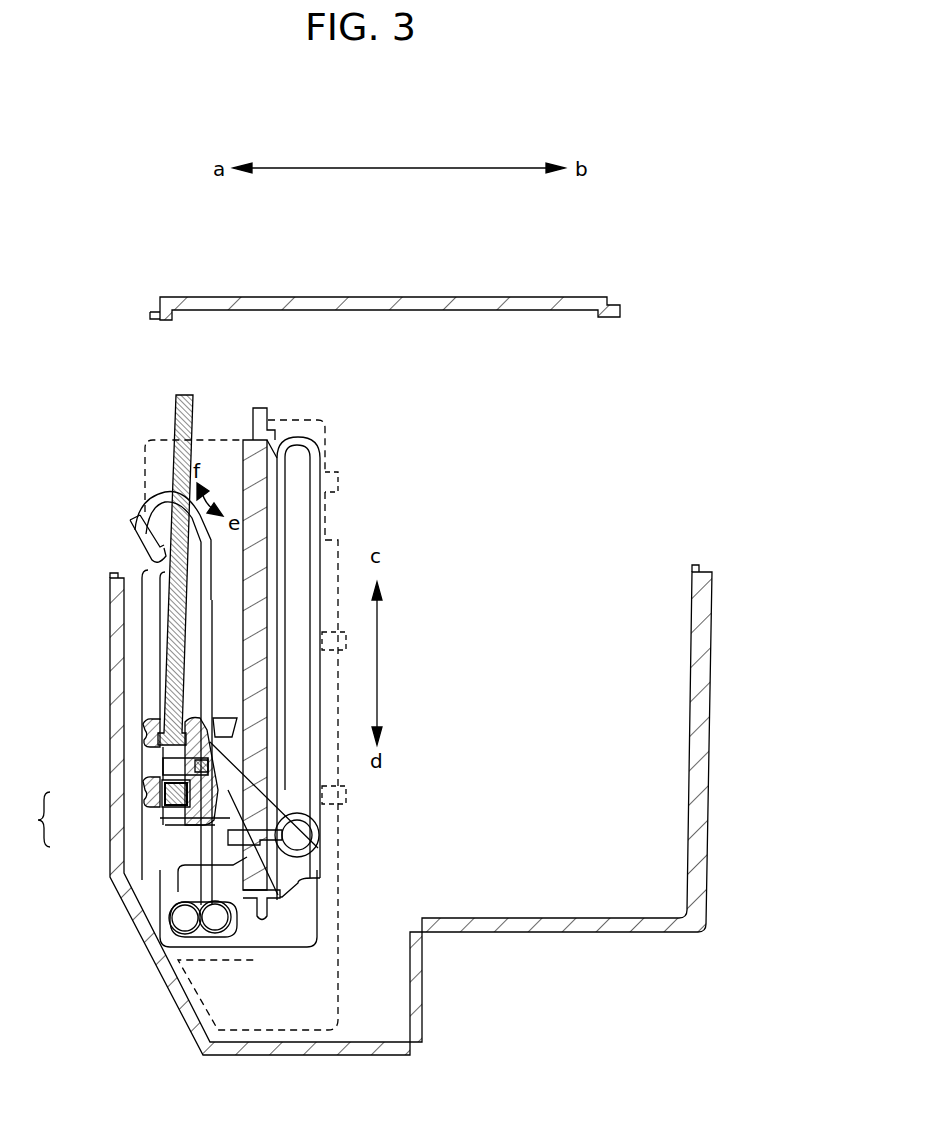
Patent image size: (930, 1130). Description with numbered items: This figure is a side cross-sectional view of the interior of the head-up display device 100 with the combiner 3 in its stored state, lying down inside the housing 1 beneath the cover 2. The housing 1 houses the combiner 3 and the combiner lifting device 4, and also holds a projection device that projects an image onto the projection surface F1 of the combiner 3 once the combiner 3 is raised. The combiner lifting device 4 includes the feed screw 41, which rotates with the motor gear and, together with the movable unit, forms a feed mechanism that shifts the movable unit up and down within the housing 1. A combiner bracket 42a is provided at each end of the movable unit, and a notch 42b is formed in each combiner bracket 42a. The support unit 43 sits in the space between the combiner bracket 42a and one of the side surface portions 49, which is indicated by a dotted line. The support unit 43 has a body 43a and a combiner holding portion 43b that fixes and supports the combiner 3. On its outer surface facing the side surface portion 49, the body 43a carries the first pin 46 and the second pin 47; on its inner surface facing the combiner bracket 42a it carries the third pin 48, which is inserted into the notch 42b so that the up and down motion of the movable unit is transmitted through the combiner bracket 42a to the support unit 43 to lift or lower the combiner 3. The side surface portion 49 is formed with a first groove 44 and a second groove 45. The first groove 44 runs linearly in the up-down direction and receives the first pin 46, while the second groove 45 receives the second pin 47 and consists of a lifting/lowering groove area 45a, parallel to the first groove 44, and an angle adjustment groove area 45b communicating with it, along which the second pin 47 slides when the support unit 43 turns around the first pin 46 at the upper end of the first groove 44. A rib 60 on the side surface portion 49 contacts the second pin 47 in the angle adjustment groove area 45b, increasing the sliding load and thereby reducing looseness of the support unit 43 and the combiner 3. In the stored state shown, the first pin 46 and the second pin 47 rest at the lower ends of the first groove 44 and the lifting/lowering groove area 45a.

The housing 1 is at (545, 934).
The cover 2 is at (389, 298).
The combiner 3 is at (172, 421).
The combiner lifting device 4 is at (330, 435).
The feed screw 41 is at (262, 406).
The combiner bracket 42a is at (230, 963).
The notch 42b is at (243, 912).
The support unit 43 is at (32, 819).
The body 43a is at (160, 882).
The combiner holding portion 43b is at (165, 800).
The first groove 44 is at (305, 515).
The second groove 45 is at (190, 633).
The lifting/lowering groove area 45a is at (148, 736).
The angle adjustment groove area 45b is at (130, 547).
The first pin 46 is at (300, 826).
The second pin 47 is at (182, 925).
The third pin 48 is at (227, 920).
The side surface portion 49 is at (290, 1020).
The rib 60 is at (138, 518).
The head-up display device 100 is at (518, 224).
The projection surface F1 is at (193, 420).